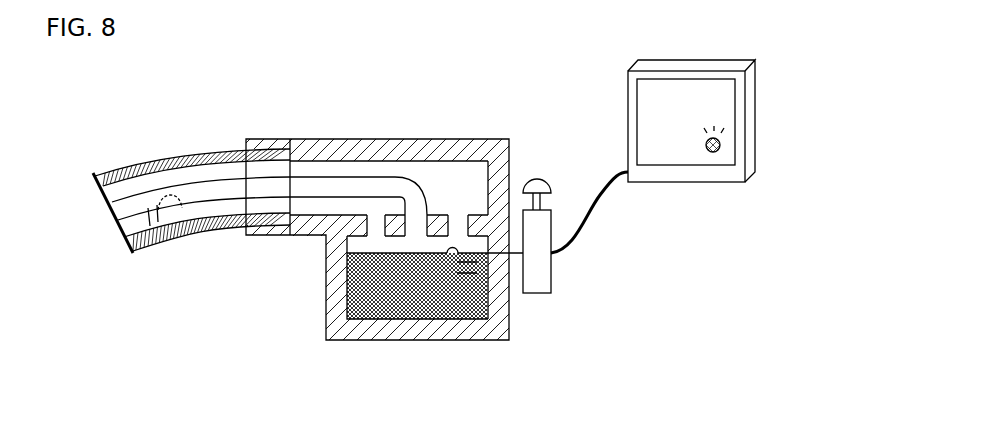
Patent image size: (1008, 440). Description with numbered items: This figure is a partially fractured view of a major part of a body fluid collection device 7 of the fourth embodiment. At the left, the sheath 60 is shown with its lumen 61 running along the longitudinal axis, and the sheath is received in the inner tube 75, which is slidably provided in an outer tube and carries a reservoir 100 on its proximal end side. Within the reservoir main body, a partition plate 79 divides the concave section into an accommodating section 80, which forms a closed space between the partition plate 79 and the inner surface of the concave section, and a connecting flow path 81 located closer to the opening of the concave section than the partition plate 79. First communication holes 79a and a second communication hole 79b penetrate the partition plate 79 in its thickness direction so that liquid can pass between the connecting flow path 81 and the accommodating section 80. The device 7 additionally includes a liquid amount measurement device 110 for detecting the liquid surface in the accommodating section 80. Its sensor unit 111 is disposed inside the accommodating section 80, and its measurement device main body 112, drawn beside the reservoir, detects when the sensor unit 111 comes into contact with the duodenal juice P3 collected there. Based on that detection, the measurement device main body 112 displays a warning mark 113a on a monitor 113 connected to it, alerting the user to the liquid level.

The device 7 is at (506, 108).
The sheath 60 is at (148, 226).
The lumen 61 is at (168, 212).
The inner tube 75 is at (143, 160).
The partition plate 79 is at (397, 228).
The first communication hole 79a is at (450, 213).
The second communication hole 79b is at (393, 300).
The accommodating section 80 is at (480, 308).
The connecting flow path 81 is at (462, 173).
The reservoir 100 is at (233, 126).
The liquid amount measurement device 110 is at (557, 174).
The sensor unit 111 is at (452, 258).
The measurement device main body 112 is at (538, 277).
The monitor 113 is at (687, 173).
The warning mark 113a is at (722, 145).
The duodenal juice P3 is at (414, 236).